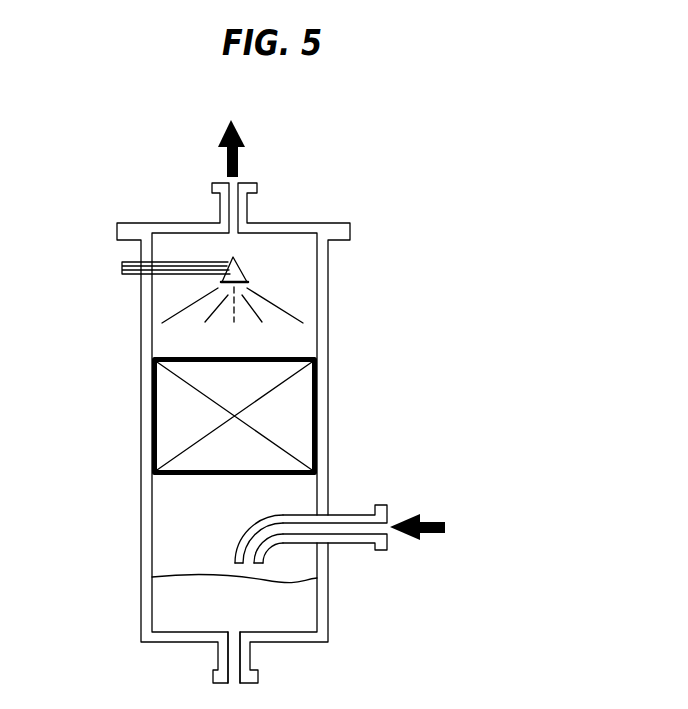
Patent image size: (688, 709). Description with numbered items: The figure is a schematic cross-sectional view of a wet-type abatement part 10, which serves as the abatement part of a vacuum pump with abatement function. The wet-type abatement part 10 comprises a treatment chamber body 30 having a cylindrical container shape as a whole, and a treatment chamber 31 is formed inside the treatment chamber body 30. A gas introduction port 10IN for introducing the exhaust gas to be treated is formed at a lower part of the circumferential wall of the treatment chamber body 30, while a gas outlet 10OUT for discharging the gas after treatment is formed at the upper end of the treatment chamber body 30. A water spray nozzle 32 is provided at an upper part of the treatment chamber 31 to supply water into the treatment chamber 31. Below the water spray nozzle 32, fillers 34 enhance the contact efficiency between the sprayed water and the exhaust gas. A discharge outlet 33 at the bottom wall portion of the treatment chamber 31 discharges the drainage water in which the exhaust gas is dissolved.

The wet-type abatement part 10 is at (332, 404).
The gas outlet 10OUT is at (238, 178).
The gas introduction port 10IN is at (380, 528).
The treatment chamber body 30 is at (330, 339).
The treatment chamber 31 is at (173, 332).
The water spray nozzle 32 is at (236, 256).
The discharge outlet 33 is at (233, 660).
The fillers 34 is at (297, 417).